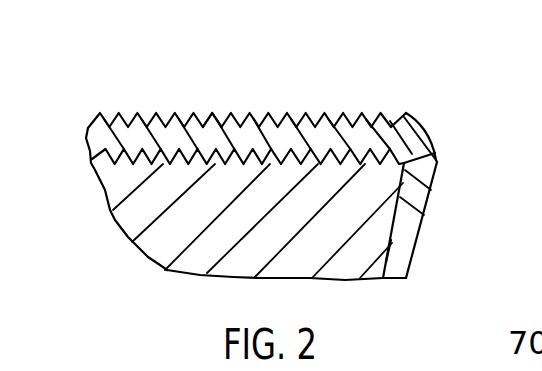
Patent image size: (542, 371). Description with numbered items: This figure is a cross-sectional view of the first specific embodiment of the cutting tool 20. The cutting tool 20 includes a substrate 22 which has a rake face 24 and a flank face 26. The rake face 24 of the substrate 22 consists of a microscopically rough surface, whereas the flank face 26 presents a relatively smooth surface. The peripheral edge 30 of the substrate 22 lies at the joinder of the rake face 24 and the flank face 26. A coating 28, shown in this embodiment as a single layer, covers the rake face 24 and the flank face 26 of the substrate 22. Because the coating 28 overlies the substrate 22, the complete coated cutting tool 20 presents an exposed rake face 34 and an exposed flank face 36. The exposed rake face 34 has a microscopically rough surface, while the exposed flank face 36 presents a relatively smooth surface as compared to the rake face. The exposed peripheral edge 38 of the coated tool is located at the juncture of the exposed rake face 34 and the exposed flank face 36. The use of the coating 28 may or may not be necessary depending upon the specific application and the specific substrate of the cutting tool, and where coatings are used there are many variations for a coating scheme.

The cutting tool 20 is at (148, 85).
The substrate 22 is at (167, 268).
The rake face 24 is at (114, 125).
The exposed rake face 34 is at (213, 120).
The exposed peripheral edge 38 is at (433, 137).
The peripheral edge 30 is at (430, 158).
The exposed flank face 36 is at (430, 205).
The flank face 26 is at (387, 243).
The coating 28 is at (397, 270).